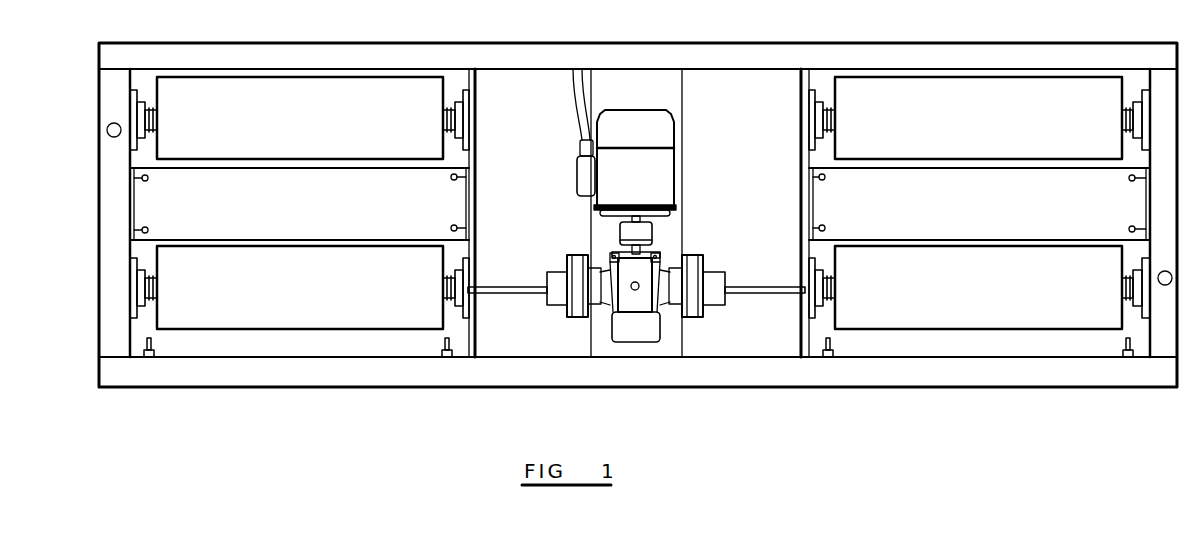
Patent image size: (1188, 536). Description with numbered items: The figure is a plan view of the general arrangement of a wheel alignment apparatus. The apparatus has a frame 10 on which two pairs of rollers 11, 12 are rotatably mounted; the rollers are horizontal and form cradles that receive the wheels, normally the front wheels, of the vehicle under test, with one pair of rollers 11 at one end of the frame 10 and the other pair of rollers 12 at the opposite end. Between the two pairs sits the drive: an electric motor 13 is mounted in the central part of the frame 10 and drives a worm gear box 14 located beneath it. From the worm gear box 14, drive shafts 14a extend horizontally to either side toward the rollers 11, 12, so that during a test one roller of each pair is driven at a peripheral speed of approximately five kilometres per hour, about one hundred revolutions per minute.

The frame 10 is at (560, 371).
The first pair of rollers 11 is at (340, 143).
The second pair of rollers 12 is at (989, 138).
The electric motor 13 is at (664, 172).
The worm gear box 14 is at (641, 270).
The drive shafts 14a is at (513, 293).